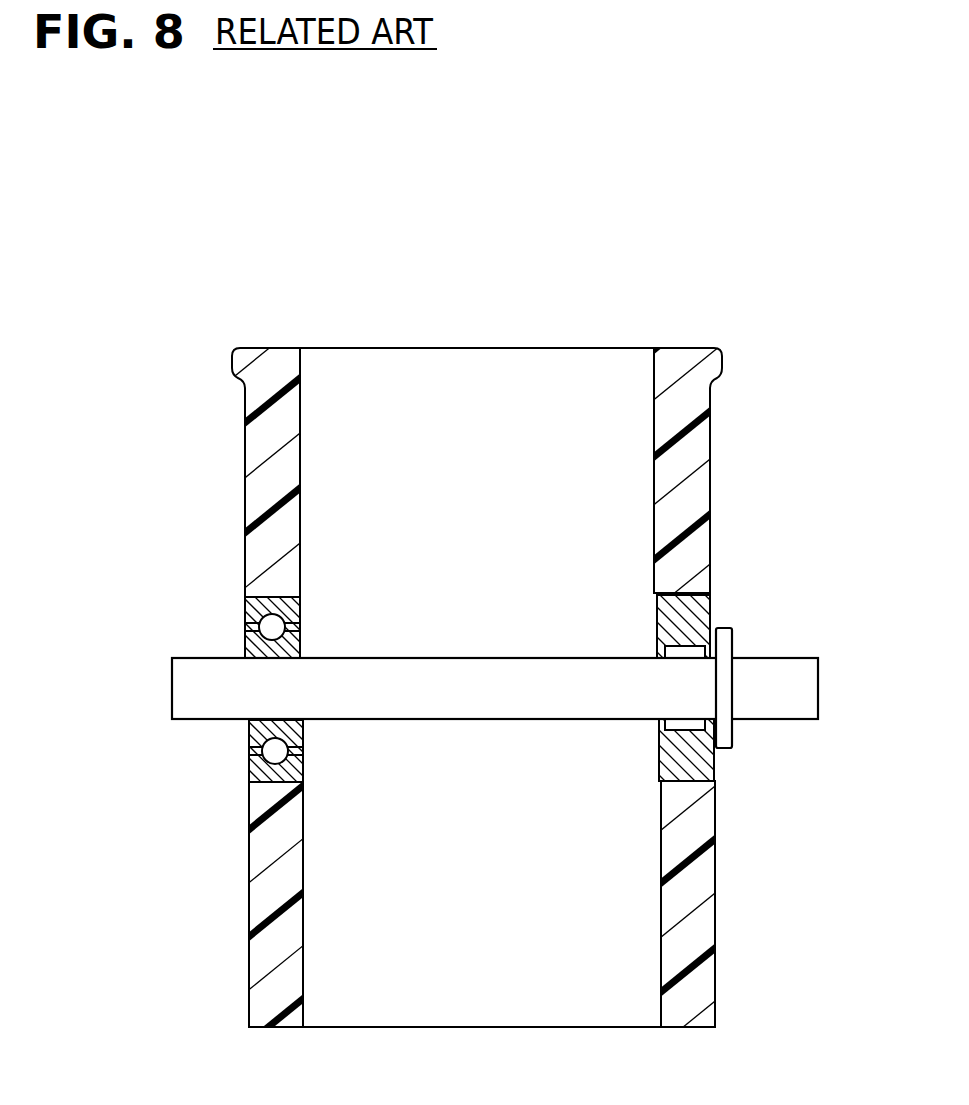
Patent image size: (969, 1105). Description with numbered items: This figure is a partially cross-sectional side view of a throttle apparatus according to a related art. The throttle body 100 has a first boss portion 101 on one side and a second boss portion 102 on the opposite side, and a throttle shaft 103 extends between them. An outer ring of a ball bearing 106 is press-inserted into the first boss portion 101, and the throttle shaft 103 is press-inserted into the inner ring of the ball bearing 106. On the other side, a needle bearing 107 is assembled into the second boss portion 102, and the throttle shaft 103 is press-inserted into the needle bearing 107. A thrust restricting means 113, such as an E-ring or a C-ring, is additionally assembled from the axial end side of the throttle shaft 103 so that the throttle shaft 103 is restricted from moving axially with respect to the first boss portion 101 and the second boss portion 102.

The throttle body 100 is at (219, 359).
The first boss portion 101 is at (270, 584).
The second boss portion 102 is at (685, 578).
The throttle shaft 103 is at (777, 668).
The ball bearing 106 is at (262, 758).
The needle bearing 107 is at (695, 762).
The thrust restricting means 113 is at (718, 630).